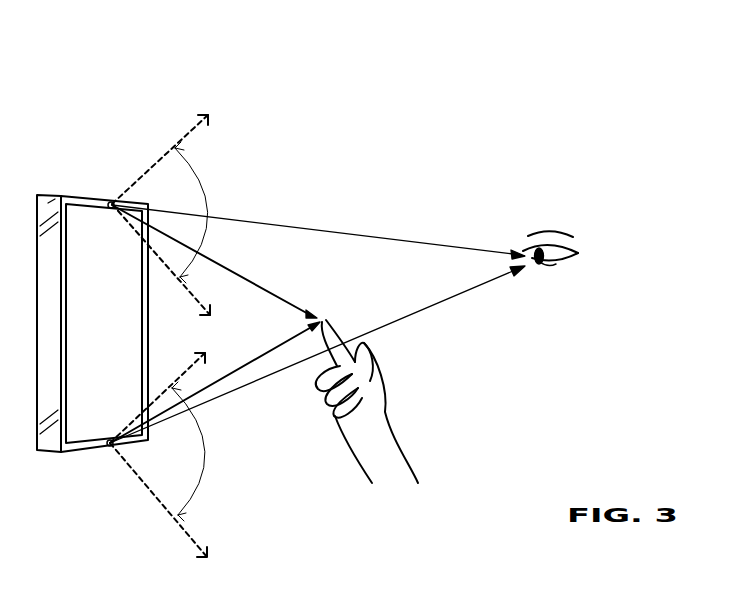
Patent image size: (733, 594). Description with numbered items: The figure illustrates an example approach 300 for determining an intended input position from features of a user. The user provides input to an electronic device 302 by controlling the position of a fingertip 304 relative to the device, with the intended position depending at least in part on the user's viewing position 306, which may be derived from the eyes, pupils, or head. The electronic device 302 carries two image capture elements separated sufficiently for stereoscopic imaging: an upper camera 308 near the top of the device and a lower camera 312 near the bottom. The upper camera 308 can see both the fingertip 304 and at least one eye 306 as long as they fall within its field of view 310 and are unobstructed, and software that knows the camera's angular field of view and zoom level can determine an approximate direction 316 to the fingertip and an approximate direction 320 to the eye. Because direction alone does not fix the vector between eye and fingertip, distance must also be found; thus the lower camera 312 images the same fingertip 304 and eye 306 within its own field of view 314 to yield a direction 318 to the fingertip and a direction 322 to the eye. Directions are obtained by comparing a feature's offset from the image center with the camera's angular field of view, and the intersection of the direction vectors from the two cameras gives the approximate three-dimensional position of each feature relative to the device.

The approach 300 is at (650, 104).
The electronic device 302 is at (74, 195).
The fingertip 304 is at (336, 318).
The viewing position 306 is at (596, 245).
The upper camera 308 is at (110, 202).
The field of view 310 is at (187, 134).
The lower camera 312 is at (110, 446).
The field of view 314 is at (156, 496).
The direction 316 is at (243, 277).
The direction 318 is at (230, 376).
The direction 320 is at (378, 237).
The direction 322 is at (432, 305).